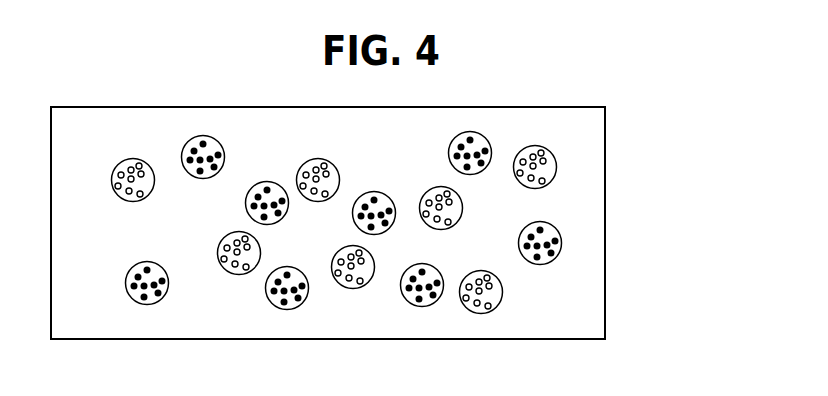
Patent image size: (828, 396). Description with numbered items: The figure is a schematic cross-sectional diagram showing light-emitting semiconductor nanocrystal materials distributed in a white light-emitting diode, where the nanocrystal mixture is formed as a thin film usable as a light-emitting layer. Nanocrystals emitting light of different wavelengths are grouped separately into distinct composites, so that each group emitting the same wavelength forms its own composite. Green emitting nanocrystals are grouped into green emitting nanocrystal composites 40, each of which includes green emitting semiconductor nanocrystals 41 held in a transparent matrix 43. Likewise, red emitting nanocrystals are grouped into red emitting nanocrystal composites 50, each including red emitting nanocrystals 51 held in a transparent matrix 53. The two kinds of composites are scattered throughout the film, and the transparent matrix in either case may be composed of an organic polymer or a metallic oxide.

The green emitting nanocrystal composite 40 is at (616, 150).
The green emitting semiconductor nanocrystals 41 is at (545, 162).
The transparent matrix 43 is at (556, 171).
The red emitting nanocrystal composite 50 is at (618, 239).
The red emitting nanocrystals 51 is at (556, 230).
The transparent matrix 53 is at (558, 251).